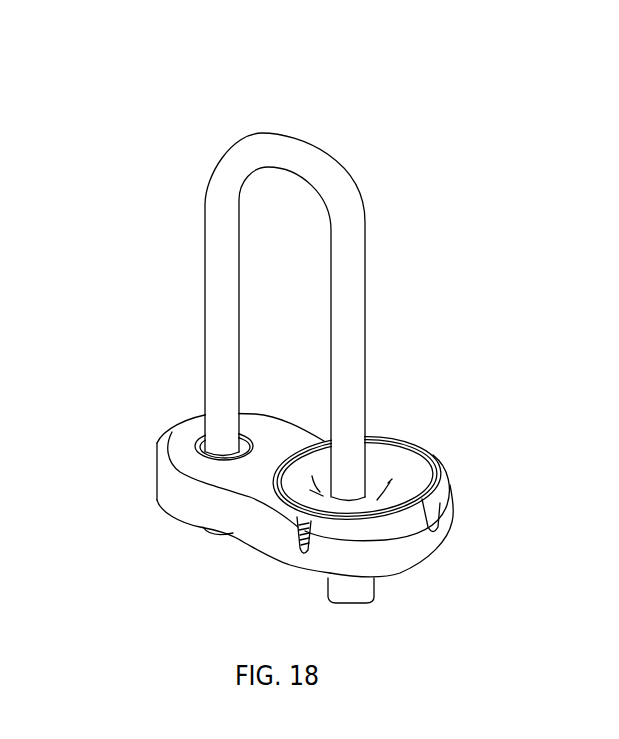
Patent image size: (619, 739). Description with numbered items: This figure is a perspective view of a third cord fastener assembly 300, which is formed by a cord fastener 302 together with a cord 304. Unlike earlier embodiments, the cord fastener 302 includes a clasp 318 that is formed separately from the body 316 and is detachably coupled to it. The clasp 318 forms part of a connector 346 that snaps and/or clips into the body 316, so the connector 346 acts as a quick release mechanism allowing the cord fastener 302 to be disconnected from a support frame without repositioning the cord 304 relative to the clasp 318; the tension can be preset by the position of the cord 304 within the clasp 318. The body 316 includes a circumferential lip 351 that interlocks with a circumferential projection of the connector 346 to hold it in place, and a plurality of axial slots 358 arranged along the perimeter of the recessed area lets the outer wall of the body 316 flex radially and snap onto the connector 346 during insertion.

The cord fastener assembly 300 is at (215, 131).
The cord 304 is at (292, 152).
The cord fastener 302 is at (158, 489).
The body 316 is at (252, 537).
The circumferential lip 351 is at (450, 475).
The connector 346 is at (305, 453).
The clasp 318 is at (382, 477).
The axial slots 358 is at (235, 522).